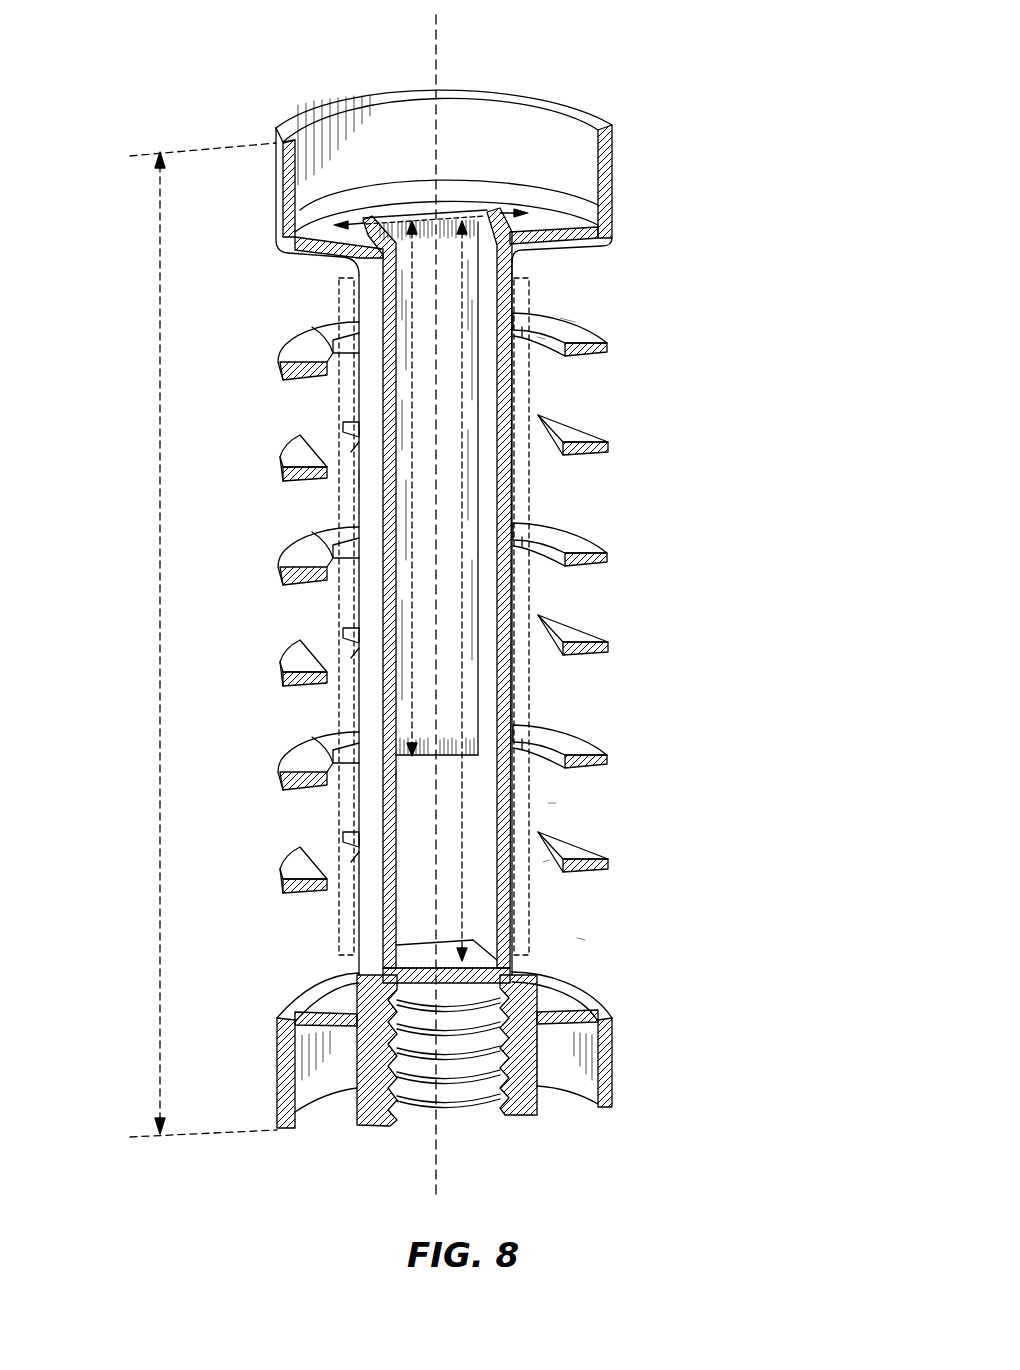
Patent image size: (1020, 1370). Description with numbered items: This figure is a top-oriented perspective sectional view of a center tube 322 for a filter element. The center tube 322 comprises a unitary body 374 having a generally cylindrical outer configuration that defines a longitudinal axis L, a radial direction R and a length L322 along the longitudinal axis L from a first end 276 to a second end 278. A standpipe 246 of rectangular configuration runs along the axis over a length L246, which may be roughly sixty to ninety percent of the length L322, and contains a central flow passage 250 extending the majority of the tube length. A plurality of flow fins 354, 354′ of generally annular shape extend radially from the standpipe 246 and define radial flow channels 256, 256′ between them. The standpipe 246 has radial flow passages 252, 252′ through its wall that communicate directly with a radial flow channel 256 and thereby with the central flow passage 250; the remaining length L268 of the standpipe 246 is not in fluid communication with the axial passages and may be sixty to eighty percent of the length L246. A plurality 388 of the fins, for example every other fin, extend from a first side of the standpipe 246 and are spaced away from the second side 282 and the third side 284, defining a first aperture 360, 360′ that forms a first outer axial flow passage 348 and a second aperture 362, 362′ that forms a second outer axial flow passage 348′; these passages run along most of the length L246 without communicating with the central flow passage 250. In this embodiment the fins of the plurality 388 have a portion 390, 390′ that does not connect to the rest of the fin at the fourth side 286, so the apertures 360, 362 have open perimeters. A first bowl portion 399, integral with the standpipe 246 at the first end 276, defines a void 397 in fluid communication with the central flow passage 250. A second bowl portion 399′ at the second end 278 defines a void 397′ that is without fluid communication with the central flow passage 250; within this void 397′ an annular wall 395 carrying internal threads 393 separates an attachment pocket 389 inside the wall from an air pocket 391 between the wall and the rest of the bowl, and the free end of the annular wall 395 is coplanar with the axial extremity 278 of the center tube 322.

The center tube 322 is at (460, 605).
The unitary body 374 is at (696, 58).
The first bowl portion 399 is at (363, 86).
The first end 276 is at (535, 98).
The void 397 is at (437, 110).
The radial direction R is at (353, 222).
The longitudinal axis L is at (433, 44).
The length of center tube L322 is at (160, 645).
The first outer axial flow passage 348 is at (338, 300).
The second outer axial flow passage 348′ is at (532, 283).
The standpipe 246 is at (515, 306).
The central flow passage 250 is at (412, 473).
The length of standpipe not in fluid communication with axial flow passage L268 is at (513, 515).
The length of standpipe L246 is at (463, 580).
The radial flow passage 252 is at (405, 918).
The radial flow passage 252′ is at (408, 773).
The radial flow channel 256 is at (583, 316).
The radial flow channel 256′ is at (577, 938).
The first aperture 360 is at (333, 360).
The first aperture 360′ is at (325, 862).
The second side of standpipe 282 is at (365, 520).
The fourth side of standpipe 286 is at (357, 480).
The flow fin 354 is at (592, 353).
The flow fin 354′ is at (300, 458).
The second aperture 362 is at (537, 337).
The second aperture 362′ is at (543, 862).
The third side of standpipe 284 is at (512, 563).
The plurality of fins 388 is at (587, 438).
The portion of fin not connected to rest of fin 390 is at (343, 427).
The portion of fin not connected to rest of fin 390′ is at (343, 633).
The second bowl portion 399′ is at (612, 1071).
The air pocket 391 is at (330, 1110).
The internal threads 393 is at (410, 1098).
The attachment pocket 389 is at (472, 1098).
The annular wall 395 is at (537, 1117).
The void 397′ is at (562, 1090).
The second end 278 is at (604, 1110).